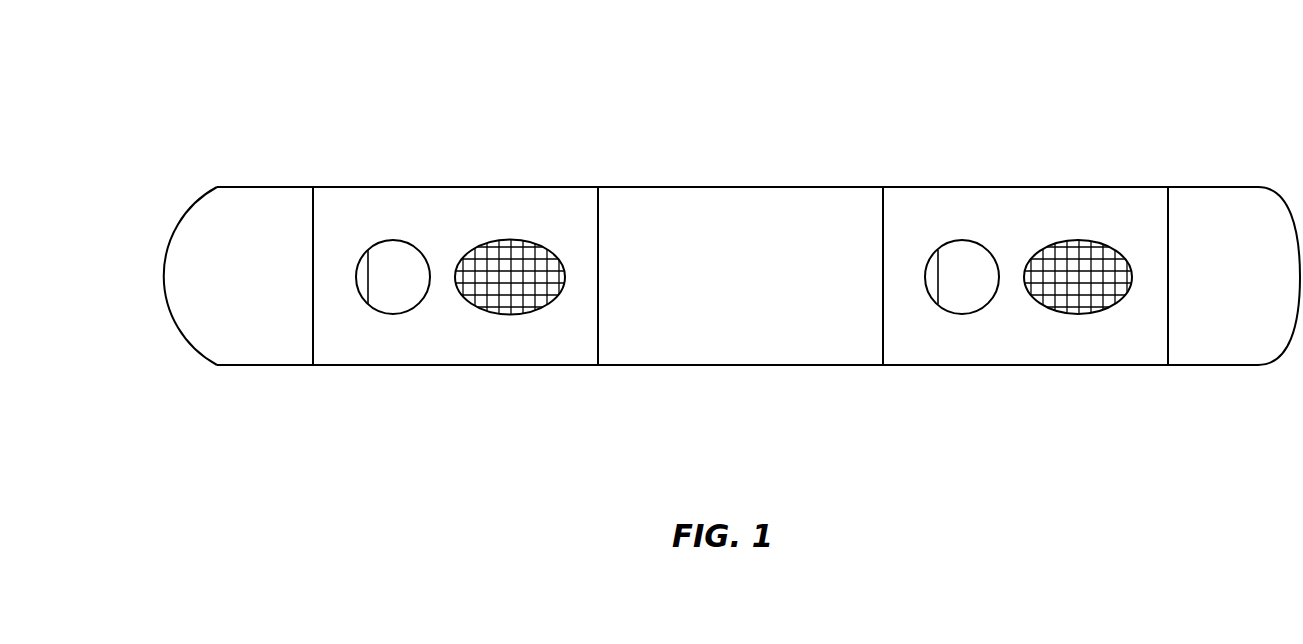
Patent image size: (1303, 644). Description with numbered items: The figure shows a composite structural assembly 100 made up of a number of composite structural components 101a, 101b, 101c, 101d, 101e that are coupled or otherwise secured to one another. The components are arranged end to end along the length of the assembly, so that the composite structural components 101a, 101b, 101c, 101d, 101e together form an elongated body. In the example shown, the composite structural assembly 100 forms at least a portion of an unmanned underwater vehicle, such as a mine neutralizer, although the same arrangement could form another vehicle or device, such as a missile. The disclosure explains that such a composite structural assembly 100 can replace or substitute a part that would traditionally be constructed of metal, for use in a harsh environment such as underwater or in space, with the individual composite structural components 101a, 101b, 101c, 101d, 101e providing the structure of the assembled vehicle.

The composite structural assembly 100 is at (482, 46).
The composite structural component 101a is at (1206, 187).
The composite structural component 101b is at (1027, 187).
The composite structural component 101c is at (738, 187).
The composite structural component 101d is at (445, 187).
The composite structural component 101e is at (250, 187).